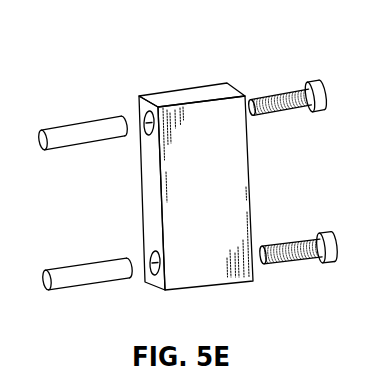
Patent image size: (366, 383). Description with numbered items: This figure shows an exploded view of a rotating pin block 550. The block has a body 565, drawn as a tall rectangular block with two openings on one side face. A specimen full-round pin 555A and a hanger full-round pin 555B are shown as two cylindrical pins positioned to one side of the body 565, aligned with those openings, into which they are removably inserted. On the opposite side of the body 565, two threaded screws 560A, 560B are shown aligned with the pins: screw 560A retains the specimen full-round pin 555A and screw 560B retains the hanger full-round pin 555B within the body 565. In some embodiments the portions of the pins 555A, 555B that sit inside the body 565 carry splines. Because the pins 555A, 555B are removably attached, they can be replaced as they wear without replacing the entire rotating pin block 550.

The rotating pin block 550 is at (140, 57).
The specimen full-round pin 555A is at (93, 148).
The hanger full-round pin 555B is at (97, 258).
The screw 560A is at (278, 116).
The screw 560B is at (280, 243).
The body 565 is at (177, 167).